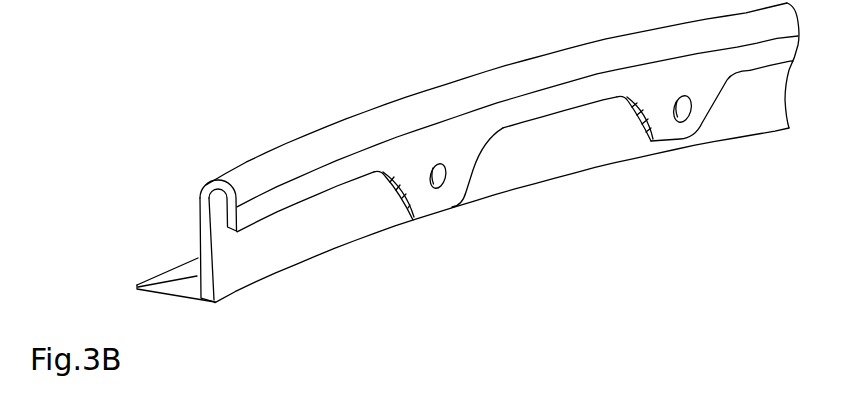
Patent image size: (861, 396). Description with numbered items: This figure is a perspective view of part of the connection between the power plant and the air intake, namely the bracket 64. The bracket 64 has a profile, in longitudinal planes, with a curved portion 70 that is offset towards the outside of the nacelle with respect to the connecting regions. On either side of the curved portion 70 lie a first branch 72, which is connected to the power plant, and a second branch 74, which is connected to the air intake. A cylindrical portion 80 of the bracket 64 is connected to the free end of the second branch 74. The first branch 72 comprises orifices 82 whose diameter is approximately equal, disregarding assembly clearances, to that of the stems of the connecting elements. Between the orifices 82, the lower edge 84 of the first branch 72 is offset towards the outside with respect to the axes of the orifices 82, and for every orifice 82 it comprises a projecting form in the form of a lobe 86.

The bracket 64 is at (297, 122).
The curved portion 70 is at (394, 118).
The first branch 72 is at (702, 107).
The second branch 74 is at (568, 163).
The cylindrical portion 80 is at (178, 291).
The orifices 82 is at (442, 182).
The lower edge 84 is at (283, 208).
The lobe 86 is at (408, 218).